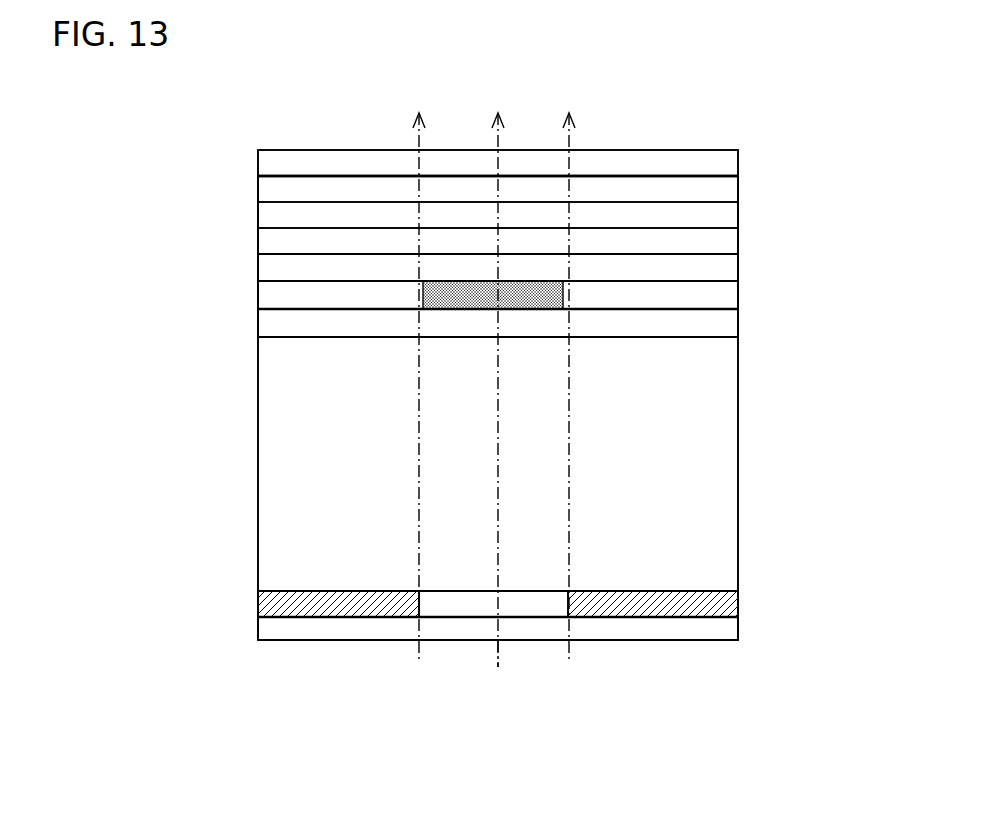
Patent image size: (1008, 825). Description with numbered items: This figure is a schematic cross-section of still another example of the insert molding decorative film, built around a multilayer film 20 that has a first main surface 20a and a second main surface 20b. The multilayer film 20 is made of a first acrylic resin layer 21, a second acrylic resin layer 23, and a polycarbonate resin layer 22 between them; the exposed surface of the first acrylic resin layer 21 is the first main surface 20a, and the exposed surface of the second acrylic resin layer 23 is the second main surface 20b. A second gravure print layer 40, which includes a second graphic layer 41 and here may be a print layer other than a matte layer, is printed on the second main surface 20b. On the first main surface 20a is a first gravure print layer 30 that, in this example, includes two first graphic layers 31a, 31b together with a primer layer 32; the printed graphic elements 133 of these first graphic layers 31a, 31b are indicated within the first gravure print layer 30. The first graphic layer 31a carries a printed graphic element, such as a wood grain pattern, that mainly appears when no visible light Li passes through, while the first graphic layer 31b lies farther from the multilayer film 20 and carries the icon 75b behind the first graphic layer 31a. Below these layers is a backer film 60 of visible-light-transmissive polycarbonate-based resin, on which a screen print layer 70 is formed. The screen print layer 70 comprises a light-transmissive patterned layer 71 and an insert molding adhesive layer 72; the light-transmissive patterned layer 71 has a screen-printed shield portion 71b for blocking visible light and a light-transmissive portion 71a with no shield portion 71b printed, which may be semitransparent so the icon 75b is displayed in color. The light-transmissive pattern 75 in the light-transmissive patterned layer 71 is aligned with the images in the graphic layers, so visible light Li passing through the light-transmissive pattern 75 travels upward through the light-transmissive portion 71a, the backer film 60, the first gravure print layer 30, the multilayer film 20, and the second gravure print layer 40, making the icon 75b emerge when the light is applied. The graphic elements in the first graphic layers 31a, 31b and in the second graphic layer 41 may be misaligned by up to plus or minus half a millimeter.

The second gravure print layer 40 is at (568, 156).
The second graphic layer 41 is at (731, 163).
The multilayer film 20 is at (469, 206).
The second acrylic resin layer 23 is at (267, 189).
The polycarbonate resin layer 22 is at (267, 216).
The first acrylic resin layer 21 is at (267, 242).
The first main surface 20a is at (703, 256).
The second main surface 20b is at (583, 176).
The first gravure print layer 30 is at (458, 294).
The first graphic layer 31a is at (265, 268).
The first graphic layer 31b is at (270, 292).
The primer layer 32 is at (270, 331).
The layer portions 133 is at (400, 275).
The icon 75b is at (525, 285).
The backer film 60 is at (720, 498).
The screen print layer 70 is at (469, 656).
The light-transmissive patterned layer 71 is at (427, 656).
The light-transmissive portion 71a is at (468, 608).
The shield portion 71b is at (317, 607).
The insert molding adhesive layer 72 is at (265, 628).
The light-transmissive pattern 75 is at (568, 601).
The visible light Li is at (498, 665).